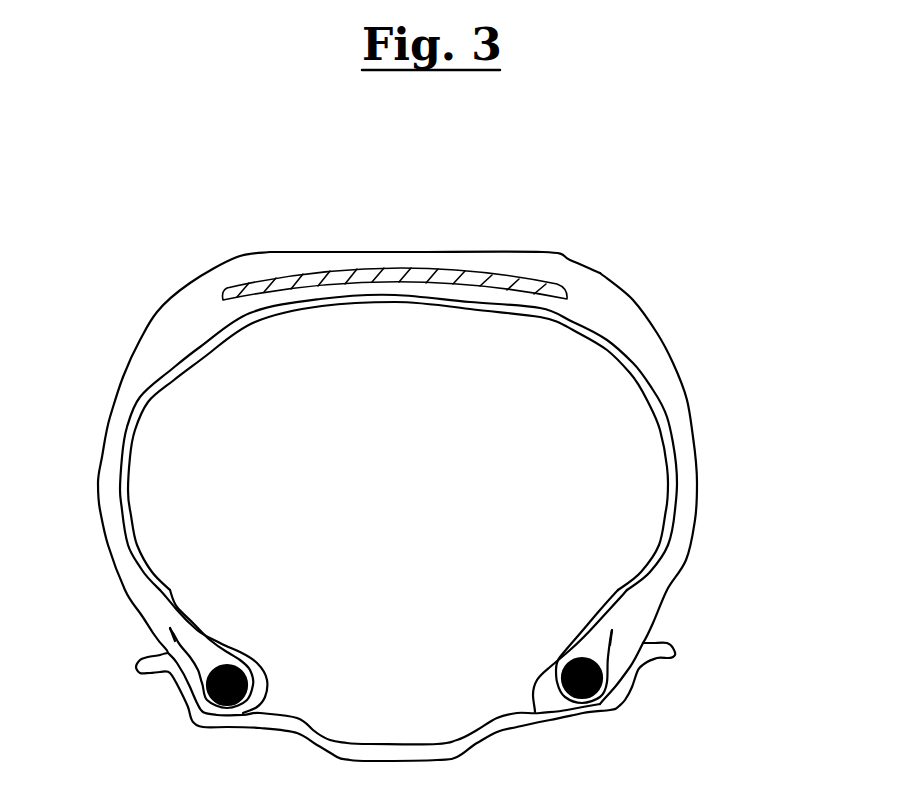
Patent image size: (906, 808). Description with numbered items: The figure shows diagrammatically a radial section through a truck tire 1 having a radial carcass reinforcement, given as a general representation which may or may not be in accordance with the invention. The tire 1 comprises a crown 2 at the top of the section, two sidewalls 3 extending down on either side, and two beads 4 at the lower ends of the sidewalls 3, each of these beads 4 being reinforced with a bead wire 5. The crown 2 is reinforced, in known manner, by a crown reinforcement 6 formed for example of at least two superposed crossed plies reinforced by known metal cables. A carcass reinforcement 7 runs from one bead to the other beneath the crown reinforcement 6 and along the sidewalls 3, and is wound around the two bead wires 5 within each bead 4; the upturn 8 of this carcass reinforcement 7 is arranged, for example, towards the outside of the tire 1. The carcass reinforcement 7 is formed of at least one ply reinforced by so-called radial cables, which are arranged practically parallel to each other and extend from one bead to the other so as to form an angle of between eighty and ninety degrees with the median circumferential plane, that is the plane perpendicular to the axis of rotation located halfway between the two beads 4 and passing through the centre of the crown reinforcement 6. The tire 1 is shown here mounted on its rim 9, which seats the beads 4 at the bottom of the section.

The truck tire 1 is at (713, 414).
The crown 2 is at (550, 272).
The sidewalls 3 is at (113, 481).
The beads 4 is at (247, 648).
The bead wire 5 is at (247, 672).
The crown reinforcement 6 is at (465, 273).
The carcass reinforcement 7 is at (138, 398).
The upturn 8 is at (167, 633).
The rim 9 is at (627, 697).